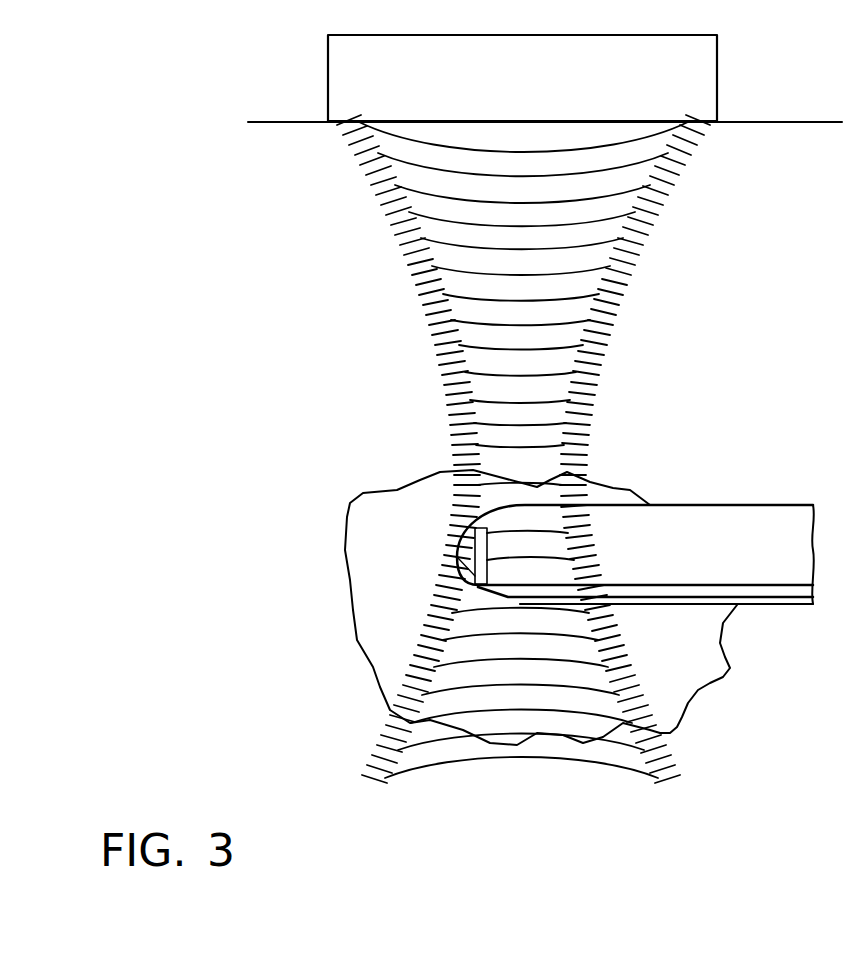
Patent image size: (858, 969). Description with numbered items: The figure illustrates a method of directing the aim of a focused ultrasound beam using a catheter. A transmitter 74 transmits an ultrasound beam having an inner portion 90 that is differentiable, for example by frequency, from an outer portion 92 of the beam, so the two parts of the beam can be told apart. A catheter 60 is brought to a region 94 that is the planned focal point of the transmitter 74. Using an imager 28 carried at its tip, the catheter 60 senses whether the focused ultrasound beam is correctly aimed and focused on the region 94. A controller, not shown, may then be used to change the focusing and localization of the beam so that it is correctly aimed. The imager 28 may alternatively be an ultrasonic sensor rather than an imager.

The transmitter 74 is at (522, 78).
The outer portion 92 is at (679, 177).
The inner portion 90 is at (588, 247).
The catheter 60 is at (703, 505).
The imager 28 is at (457, 558).
The region 94 is at (702, 670).